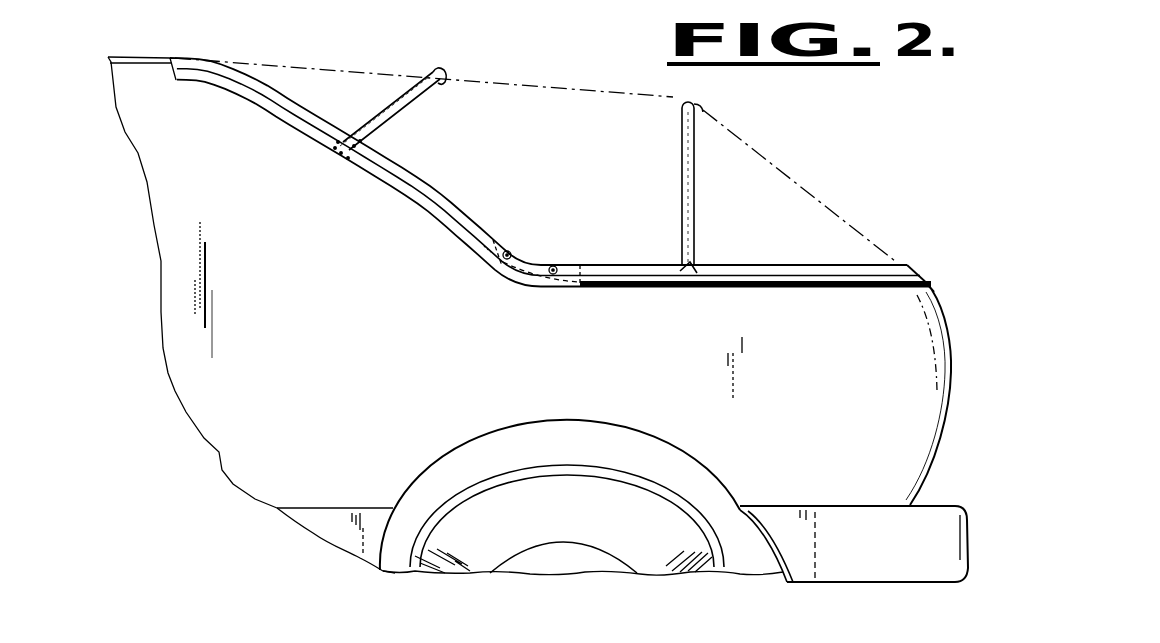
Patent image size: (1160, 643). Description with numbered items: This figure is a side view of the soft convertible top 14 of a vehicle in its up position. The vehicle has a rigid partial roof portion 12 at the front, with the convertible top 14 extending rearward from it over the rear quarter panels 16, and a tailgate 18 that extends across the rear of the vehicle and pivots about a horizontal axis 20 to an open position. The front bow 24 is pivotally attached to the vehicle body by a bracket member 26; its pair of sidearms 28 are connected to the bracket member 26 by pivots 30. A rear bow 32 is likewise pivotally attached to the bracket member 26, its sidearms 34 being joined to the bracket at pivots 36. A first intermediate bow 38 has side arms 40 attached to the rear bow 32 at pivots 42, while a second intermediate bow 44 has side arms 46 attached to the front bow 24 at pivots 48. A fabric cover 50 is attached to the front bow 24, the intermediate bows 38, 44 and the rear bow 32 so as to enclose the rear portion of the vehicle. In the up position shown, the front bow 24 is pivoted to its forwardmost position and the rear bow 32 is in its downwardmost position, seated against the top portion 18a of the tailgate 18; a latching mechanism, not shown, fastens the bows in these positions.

The rigid partial roof portion 12 is at (145, 90).
The soft convertible top portion 14 is at (603, 82).
The rear quarter panel 16 is at (658, 363).
The tailgate 18 is at (953, 345).
The top portion of tailgate 18a is at (936, 296).
The horizontal axis 20 is at (897, 486).
The front bow 24 is at (392, 176).
The bracket member 26 is at (535, 263).
The sidearm 28 is at (408, 198).
The pivot 30 is at (508, 251).
The rear bow 32 is at (898, 270).
The sidearm 34 is at (788, 271).
The pivot 36 is at (568, 269).
The first intermediate bow 38 is at (673, 106).
The side arm 40 is at (690, 188).
The pivot 42 is at (690, 273).
The second intermediate bow 44 is at (433, 67).
The side arm 46 is at (390, 110).
The pivot 48 is at (334, 148).
The fabric cover 50 is at (519, 77).